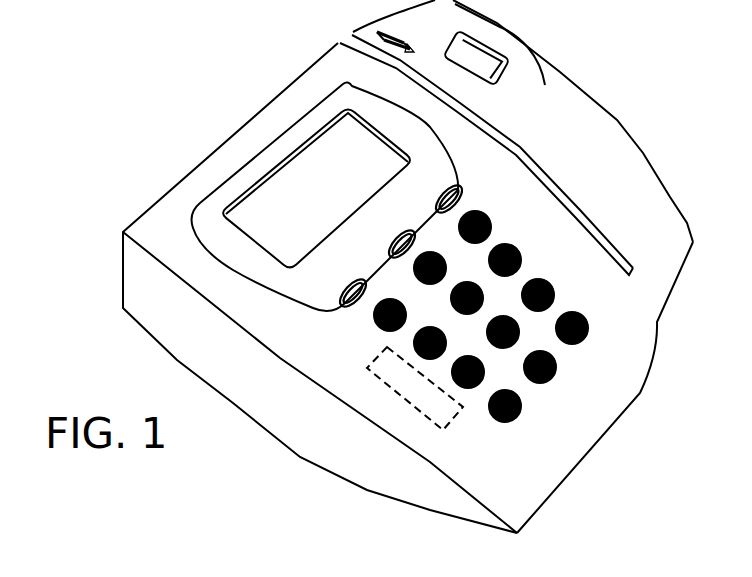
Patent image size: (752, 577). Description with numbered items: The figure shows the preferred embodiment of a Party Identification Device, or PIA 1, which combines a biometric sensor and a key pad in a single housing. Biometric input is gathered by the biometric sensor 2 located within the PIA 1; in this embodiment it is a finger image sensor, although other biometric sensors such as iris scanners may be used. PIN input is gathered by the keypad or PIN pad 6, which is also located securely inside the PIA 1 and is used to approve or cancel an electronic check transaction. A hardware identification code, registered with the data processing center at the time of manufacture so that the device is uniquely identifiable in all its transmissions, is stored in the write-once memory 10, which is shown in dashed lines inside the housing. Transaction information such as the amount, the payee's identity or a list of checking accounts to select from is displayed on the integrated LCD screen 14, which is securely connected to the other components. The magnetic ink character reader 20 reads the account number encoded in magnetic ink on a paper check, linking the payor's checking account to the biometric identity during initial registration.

The Party Identification Device (PIA) 1 is at (270, 460).
The biometric sensor 2 is at (480, 62).
The keypad or PIN pad 6 is at (609, 332).
The write-once memory 10 is at (424, 400).
The integrated LCD screen 14 is at (300, 177).
The magnetic ink character reader (MICR) 20 is at (350, 34).